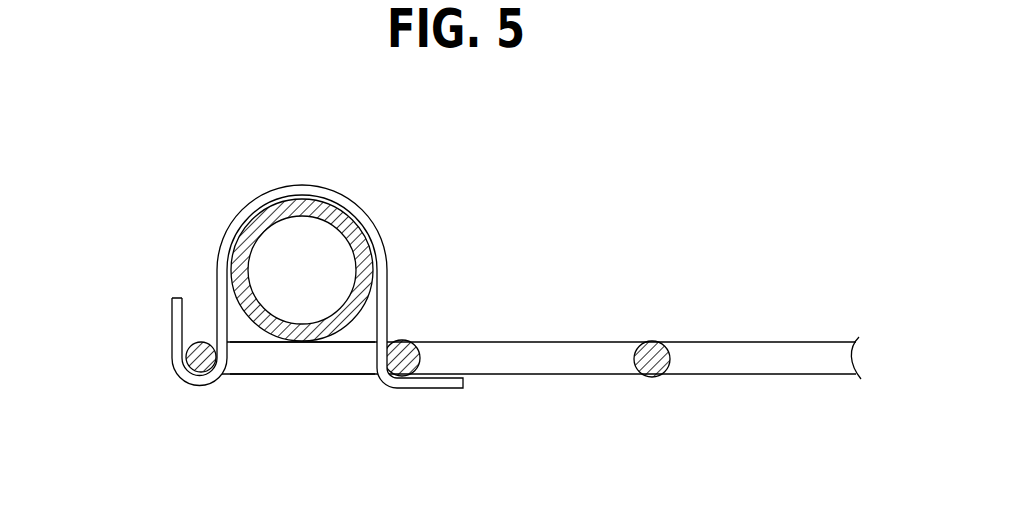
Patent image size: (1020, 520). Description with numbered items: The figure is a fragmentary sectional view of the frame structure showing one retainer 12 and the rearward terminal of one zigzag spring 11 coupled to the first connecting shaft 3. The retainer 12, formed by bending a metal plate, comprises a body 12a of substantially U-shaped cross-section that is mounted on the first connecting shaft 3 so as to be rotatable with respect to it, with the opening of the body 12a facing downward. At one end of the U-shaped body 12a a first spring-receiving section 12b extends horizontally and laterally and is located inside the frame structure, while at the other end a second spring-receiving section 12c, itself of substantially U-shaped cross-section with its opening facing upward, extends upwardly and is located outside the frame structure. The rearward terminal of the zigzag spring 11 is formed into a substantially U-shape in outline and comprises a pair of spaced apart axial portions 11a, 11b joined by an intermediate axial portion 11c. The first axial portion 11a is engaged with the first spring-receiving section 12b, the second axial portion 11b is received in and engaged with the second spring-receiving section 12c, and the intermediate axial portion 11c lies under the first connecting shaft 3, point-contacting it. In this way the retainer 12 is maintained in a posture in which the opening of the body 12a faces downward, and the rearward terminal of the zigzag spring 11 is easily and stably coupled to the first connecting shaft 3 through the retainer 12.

The first connecting shaft 3 is at (303, 341).
The zigzag spring 11 is at (577, 380).
The first axial portion 11a is at (405, 355).
The second axial portion 11b is at (197, 368).
The intermediate axial portion 11c is at (268, 367).
The retainer 12 is at (281, 277).
The body 12a is at (370, 218).
The first spring-receiving section 12b is at (432, 389).
The second spring-receiving section 12c is at (170, 315).